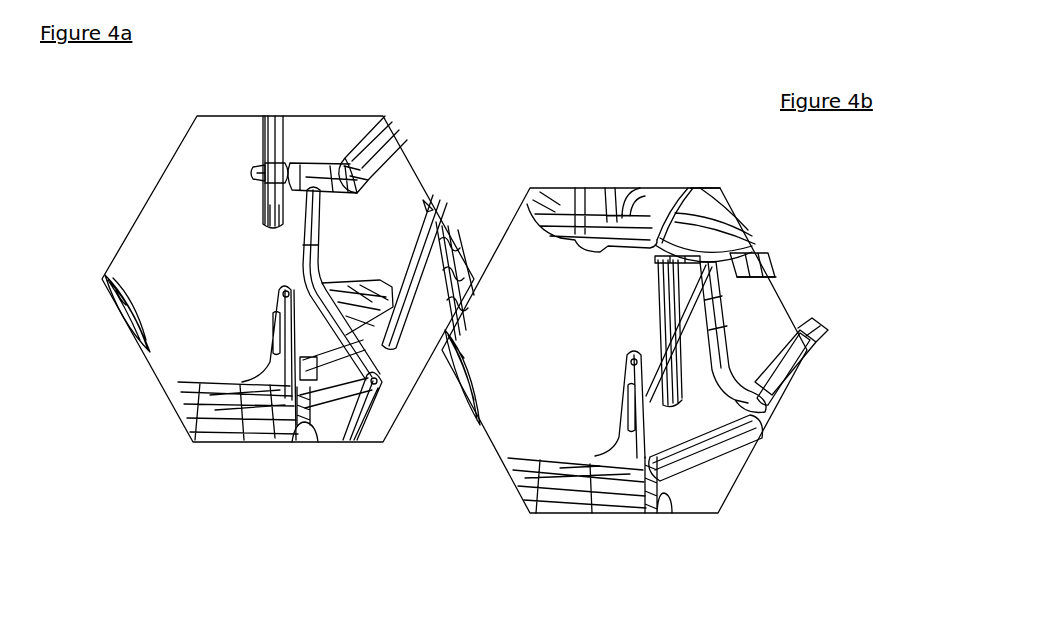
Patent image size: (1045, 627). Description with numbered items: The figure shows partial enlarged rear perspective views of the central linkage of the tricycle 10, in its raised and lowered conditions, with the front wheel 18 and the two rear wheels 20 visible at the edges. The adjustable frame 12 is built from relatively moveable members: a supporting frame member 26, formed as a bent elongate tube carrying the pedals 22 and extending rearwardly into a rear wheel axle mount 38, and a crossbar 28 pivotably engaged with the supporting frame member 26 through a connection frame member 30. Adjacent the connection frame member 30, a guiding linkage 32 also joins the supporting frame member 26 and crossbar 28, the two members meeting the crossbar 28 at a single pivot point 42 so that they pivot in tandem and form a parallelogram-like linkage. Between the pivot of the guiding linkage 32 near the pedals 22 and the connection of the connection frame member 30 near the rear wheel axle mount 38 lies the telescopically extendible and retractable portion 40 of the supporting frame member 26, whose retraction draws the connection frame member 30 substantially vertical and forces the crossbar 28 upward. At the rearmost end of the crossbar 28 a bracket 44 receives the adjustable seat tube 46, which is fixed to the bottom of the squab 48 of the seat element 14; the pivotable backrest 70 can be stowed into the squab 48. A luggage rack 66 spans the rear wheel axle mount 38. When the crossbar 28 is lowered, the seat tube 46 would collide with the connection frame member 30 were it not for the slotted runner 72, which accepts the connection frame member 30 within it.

In FIG. 4A, the tricycle 10 is at (90, 165).
In FIG. 4B, the tricycle 10 is at (866, 230).
In FIG. 4A, the adjustable frame 12 is at (245, 300).
In FIG. 4B, the adjustable frame 12 is at (822, 357).
In FIG. 4B, the seat element 14 is at (706, 186).
In FIG. 4A, the front wheel 18 is at (468, 278).
In FIG. 4A, the rear wheels 20 is at (104, 277).
In FIG. 4B, the rear wheels 20 is at (468, 402).
In FIG. 4A, the pedals 22 is at (356, 442).
In FIG. 4A, the supporting frame member 26 is at (394, 345).
In FIG. 4B, the supporting frame member 26 is at (795, 376).
In FIG. 4A, the crossbar 28 is at (396, 142).
In FIG. 4B, the crossbar 28 is at (762, 259).
In FIG. 4A, the connection frame member 30 is at (284, 266).
In FIG. 4B, the connection frame member 30 is at (652, 398).
In FIG. 4A, the guiding linkage 32 is at (314, 270).
In FIG. 4B, the guiding linkage 32 is at (760, 396).
In FIG. 4A, the rear wheel axle mount 38 is at (296, 442).
In FIG. 4B, the rear wheel axle mount 38 is at (665, 503).
In FIG. 4B, the telescopically extendible and retractable portion 40 is at (727, 455).
In FIG. 4A, the single pivot point 42 is at (322, 176).
In FIG. 4B, the single pivot point 42 is at (768, 268).
In FIG. 4A, the bracket 44 is at (253, 171).
In FIG. 4B, the bracket 44 is at (658, 259).
In FIG. 4A, the adjustable seat tube 46 is at (285, 124).
In FIG. 4B, the adjustable seat tube 46 is at (658, 286).
In FIG. 4B, the squab 48 is at (734, 216).
In FIG. 4A, the luggage rack 66 is at (226, 442).
In FIG. 4B, the luggage rack 66 is at (621, 505).
In FIG. 4B, the backrest 70 is at (541, 200).
In FIG. 4A, the slotted runner 72 is at (267, 229).
In FIG. 4B, the slotted runner 72 is at (660, 320).